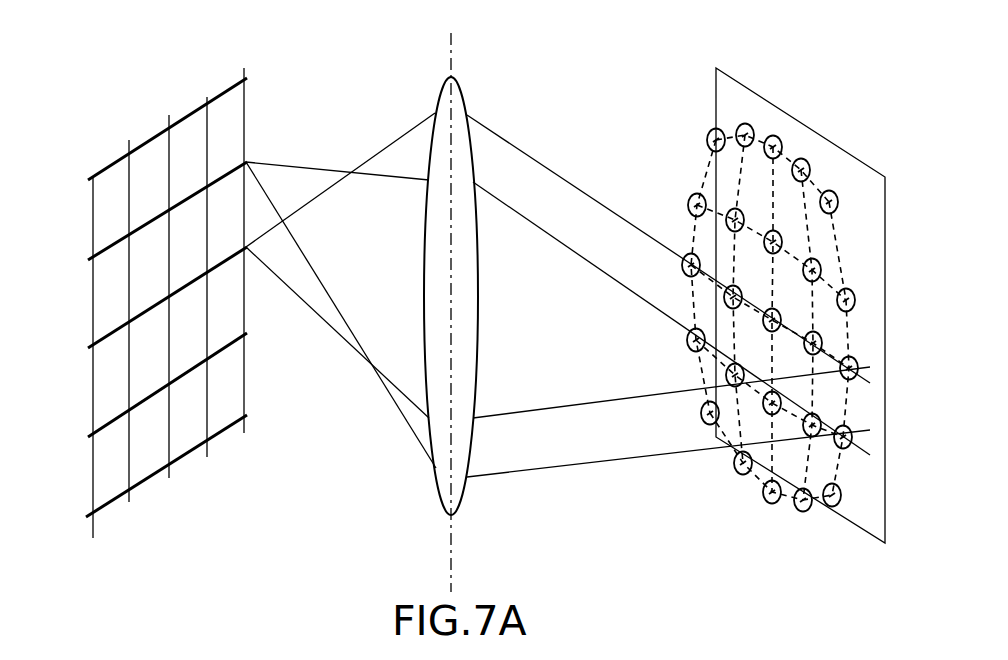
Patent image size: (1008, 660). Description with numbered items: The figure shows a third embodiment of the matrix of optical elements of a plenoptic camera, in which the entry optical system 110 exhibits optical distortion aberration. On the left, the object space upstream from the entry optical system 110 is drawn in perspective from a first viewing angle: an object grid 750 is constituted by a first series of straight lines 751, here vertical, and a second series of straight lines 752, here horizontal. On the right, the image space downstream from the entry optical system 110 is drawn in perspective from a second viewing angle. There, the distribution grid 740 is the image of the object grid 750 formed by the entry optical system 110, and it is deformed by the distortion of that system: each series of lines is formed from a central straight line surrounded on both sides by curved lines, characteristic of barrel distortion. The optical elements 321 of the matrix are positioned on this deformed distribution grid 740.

The entry optical system 110 is at (445, 100).
The optical element 321 is at (836, 198).
The distribution grid 740 is at (755, 305).
The object grid 750 is at (136, 274).
The first series of straight lines 751 is at (128, 278).
The second series of straight lines 752 is at (245, 160).